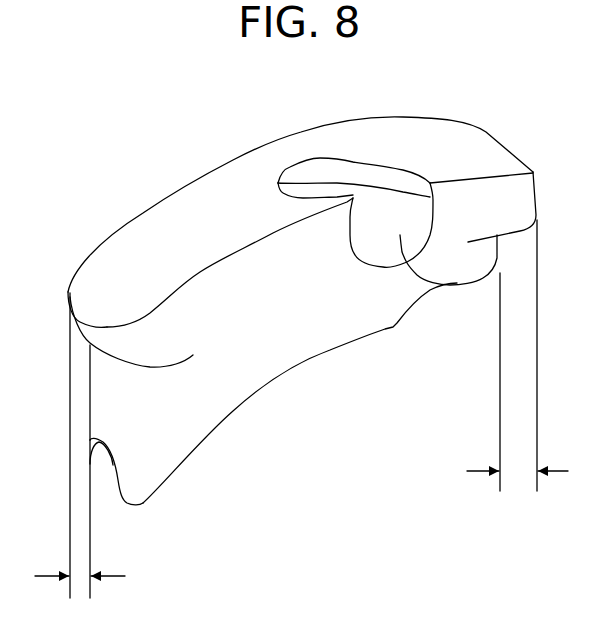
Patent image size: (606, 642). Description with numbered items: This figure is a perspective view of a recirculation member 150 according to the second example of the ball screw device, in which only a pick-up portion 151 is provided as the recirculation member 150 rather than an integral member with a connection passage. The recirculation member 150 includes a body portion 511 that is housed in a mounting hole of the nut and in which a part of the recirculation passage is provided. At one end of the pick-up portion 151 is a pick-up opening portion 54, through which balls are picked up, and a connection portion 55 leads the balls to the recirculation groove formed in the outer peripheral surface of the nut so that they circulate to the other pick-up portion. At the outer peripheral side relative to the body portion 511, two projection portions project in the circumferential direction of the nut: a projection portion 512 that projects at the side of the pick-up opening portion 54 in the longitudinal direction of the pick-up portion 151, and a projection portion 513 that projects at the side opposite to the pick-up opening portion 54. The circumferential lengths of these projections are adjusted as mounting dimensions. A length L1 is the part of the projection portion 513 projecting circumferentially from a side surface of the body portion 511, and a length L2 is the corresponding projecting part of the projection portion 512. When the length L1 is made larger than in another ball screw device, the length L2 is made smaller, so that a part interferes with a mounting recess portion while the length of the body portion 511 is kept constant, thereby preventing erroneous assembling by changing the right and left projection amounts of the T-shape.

The recirculation member 150 is at (254, 130).
The pick-up portion 151 is at (227, 207).
The body portion 511 is at (165, 414).
The projection portion 512 is at (108, 310).
The projection portion 513 is at (511, 210).
The pick-up opening portion 54 is at (115, 465).
The connection portion 55 is at (457, 283).
The length L1 is at (517, 371).
The length L2 is at (80, 459).